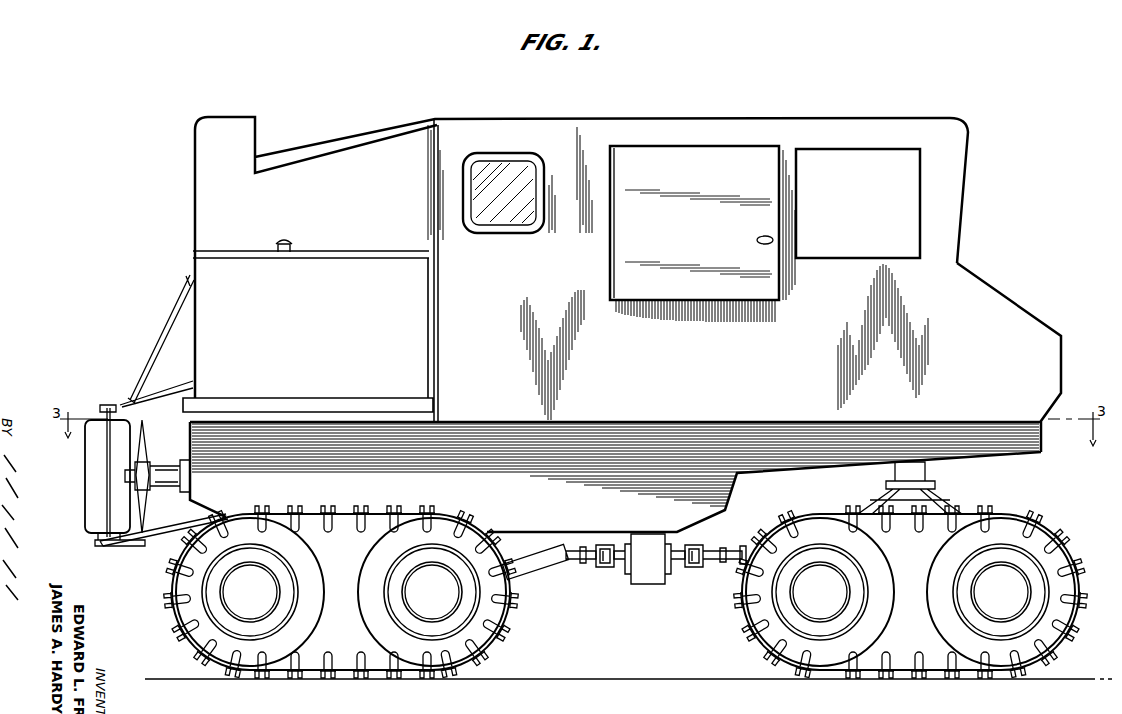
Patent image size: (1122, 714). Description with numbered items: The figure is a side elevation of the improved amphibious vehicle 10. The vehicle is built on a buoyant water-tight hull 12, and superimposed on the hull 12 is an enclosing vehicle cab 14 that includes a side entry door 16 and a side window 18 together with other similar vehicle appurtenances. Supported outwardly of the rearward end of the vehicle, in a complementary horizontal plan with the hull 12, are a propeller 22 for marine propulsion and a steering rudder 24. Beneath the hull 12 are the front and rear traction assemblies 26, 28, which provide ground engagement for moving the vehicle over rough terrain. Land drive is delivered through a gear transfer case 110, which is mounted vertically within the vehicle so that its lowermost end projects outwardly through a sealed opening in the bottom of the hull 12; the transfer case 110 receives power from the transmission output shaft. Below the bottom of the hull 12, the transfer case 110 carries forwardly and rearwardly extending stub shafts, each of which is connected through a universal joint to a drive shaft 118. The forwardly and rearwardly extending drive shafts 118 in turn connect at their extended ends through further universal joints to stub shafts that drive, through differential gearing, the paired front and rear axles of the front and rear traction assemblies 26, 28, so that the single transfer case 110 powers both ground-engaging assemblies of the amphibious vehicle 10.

The amphibious vehicle 10 is at (993, 253).
The hull 12 is at (1050, 452).
The vehicle cab 14 is at (1027, 328).
The side entry door 16 is at (722, 157).
The side window 18 is at (862, 167).
The propeller 22 is at (125, 543).
The steering rudder 24 is at (90, 500).
The front traction assembly 26 is at (1020, 508).
The rear traction assembly 28 is at (518, 625).
The gear transfer case 110 is at (645, 580).
The drive shaft 118 is at (573, 558).